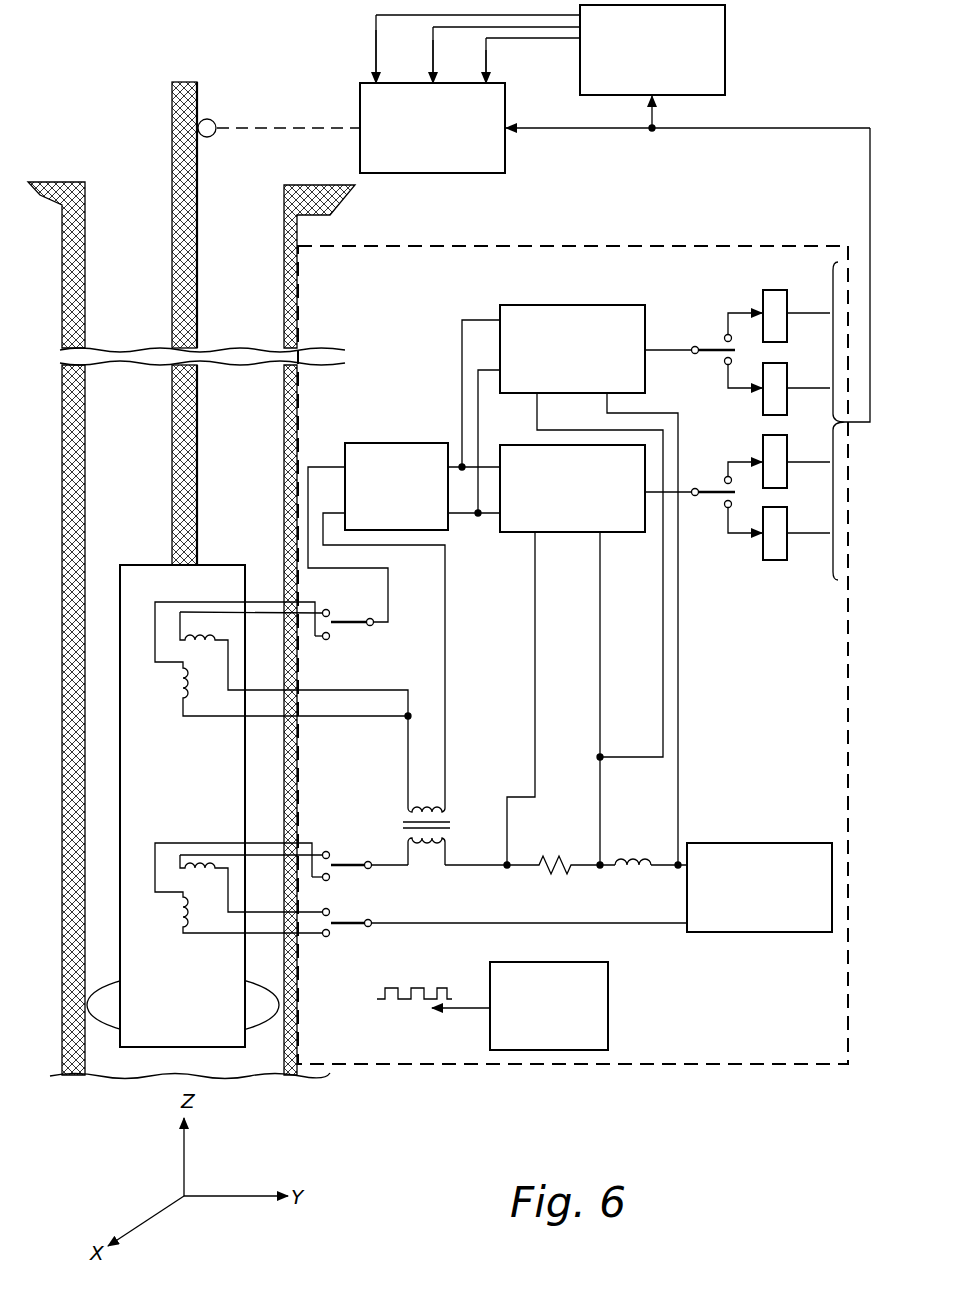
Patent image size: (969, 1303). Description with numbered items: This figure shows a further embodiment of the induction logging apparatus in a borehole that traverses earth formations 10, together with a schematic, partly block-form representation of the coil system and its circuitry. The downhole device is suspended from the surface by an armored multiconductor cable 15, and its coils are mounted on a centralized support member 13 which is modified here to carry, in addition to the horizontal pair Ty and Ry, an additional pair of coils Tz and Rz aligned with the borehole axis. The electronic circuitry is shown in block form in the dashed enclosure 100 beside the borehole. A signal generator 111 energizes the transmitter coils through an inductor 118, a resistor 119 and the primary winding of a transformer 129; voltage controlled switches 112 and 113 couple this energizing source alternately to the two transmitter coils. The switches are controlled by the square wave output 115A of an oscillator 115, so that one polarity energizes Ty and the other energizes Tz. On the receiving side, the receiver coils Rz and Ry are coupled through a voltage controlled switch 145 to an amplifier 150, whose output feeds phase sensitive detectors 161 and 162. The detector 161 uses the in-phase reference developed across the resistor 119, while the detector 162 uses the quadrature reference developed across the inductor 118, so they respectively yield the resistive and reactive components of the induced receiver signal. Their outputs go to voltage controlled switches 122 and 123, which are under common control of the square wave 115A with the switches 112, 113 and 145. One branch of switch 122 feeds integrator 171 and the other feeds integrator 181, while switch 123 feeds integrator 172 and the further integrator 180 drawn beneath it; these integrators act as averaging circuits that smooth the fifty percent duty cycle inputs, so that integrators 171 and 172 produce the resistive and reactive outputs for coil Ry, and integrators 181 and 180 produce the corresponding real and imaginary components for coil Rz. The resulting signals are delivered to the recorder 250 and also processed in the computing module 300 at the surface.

The earth formations 10 is at (58, 233).
The armored multiconductor cable 15 is at (172, 143).
The centralized support member 13 is at (137, 566).
The recorder 250 is at (505, 165).
The computing module 300 is at (725, 33).
The dashed enclosure 100 is at (461, 1060).
The phase sensitive detector 162 is at (582, 305).
The phase sensitive detector 161 is at (577, 532).
The amplifier 150 is at (395, 443).
The voltage controlled switch 145 is at (341, 617).
The voltage controlled switch 112 is at (338, 870).
The voltage controlled switch 113 is at (352, 928).
The square wave output 115A is at (348, 630).
The voltage controlled switch 123 is at (724, 367).
The voltage controlled switch 122 is at (716, 483).
The integrator 172 is at (765, 295).
The integrator 180 is at (785, 365).
The integrator 171 is at (783, 437).
The integrator 181 is at (778, 562).
The transformer 129 is at (448, 822).
The resistor 119 is at (551, 857).
The inductor 118 is at (632, 856).
The signal generator 111 is at (748, 843).
The oscillator 115 is at (600, 968).